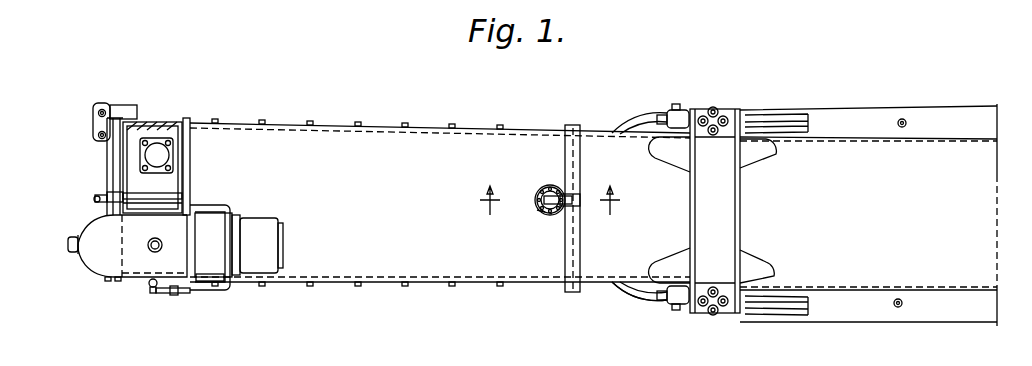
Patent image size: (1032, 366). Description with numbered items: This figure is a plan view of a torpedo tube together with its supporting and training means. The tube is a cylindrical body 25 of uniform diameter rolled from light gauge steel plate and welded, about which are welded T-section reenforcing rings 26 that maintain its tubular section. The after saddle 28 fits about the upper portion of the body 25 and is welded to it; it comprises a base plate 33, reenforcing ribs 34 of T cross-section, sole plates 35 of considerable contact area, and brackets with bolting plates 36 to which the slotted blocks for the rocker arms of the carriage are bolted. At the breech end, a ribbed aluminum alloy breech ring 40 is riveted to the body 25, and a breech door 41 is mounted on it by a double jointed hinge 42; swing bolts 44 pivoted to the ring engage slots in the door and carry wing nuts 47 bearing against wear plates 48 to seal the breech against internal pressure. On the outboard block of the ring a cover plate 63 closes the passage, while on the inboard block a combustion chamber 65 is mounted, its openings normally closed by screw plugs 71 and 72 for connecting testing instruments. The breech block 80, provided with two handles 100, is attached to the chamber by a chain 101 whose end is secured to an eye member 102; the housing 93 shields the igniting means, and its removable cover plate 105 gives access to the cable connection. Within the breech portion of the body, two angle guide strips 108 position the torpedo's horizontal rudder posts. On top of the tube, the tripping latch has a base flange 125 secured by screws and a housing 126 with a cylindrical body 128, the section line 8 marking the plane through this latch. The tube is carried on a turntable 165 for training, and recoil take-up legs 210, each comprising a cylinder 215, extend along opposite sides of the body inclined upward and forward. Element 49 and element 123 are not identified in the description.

The section line 8- 8 is at (549, 200).
The cylindrical body 25 is at (517, 137).
The reenforcing rings 26 is at (588, 124).
The after saddle 28 is at (750, 197).
The base plate 33 is at (735, 228).
The reenforcing ribs 34 is at (692, 228).
The sole plates 35 is at (762, 274).
The bolting plates 36 is at (728, 112).
The breech ring 40 is at (185, 178).
The breech door 41 is at (110, 160).
The double jointed hinge 42 is at (93, 125).
The swing bolts 44 is at (100, 196).
The wing nuts 47 is at (572, 200).
The wear plates 48 is at (550, 188).
The bearing bracket 49 is at (578, 199).
The cover plate 63 is at (160, 153).
The combustion chamber 65 is at (98, 262).
The screw plug 71 is at (68, 244).
The screw plug 72 is at (150, 251).
The breech block 80 is at (220, 237).
The housing 93 is at (257, 247).
The handles 100 is at (210, 208).
The chain 101 is at (182, 293).
The eye member 102 is at (150, 290).
The cover plate 105 is at (282, 236).
The angle guide strips 108 is at (397, 123).
The roller 123 is at (680, 112).
The base flange 125 is at (537, 211).
The housing 126 is at (528, 177).
The body 128 is at (548, 213).
The turntable 165 is at (625, 297).
The recoil take-up legs 210 is at (955, 90).
The cylinder 215 is at (878, 140).